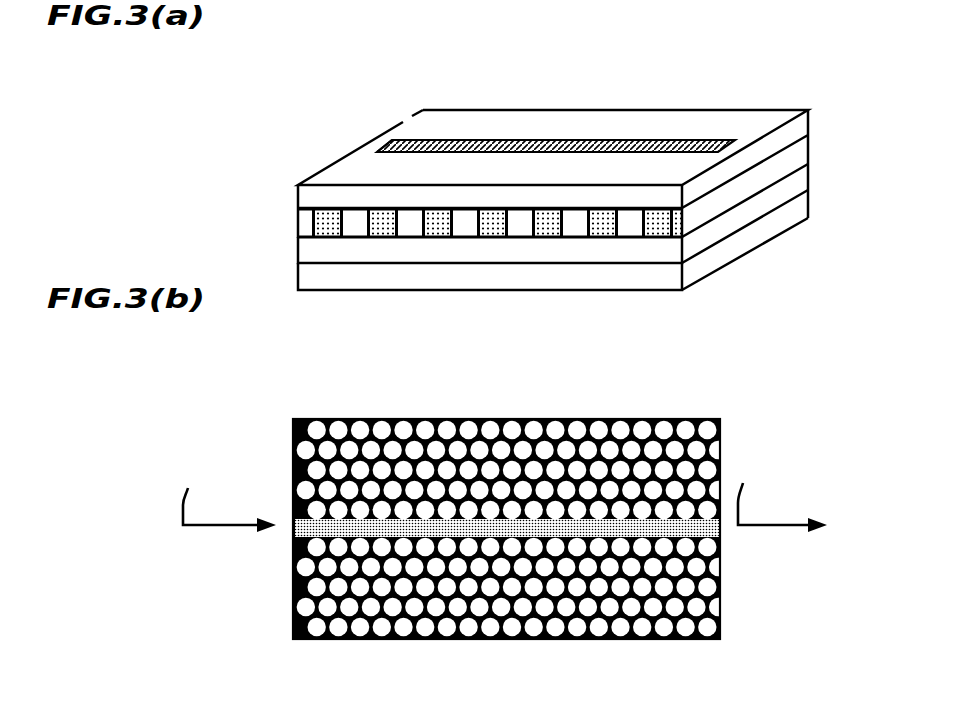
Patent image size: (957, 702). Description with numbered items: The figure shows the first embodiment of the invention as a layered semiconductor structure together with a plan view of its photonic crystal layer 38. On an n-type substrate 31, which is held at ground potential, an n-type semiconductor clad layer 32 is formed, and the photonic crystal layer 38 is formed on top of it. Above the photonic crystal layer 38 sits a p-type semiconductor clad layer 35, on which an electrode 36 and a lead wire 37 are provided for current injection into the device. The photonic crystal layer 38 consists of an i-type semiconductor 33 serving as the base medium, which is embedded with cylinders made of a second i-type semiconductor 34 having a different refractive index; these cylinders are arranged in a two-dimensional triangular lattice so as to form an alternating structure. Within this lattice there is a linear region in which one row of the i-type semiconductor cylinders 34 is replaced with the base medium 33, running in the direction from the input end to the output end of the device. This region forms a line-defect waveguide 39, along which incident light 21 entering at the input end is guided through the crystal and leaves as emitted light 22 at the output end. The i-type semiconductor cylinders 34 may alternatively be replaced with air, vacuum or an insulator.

In FIG. 3B, the incident light 21 is at (224, 493).
In FIG. 3B, the emitted light 22 is at (782, 491).
In FIG. 3A, the n-type substrate 31 is at (683, 278).
In FIG. 3A, the n-type semiconductor clad layer 32 is at (683, 252).
In FIG. 3B, the i-type semiconductor (base medium) 33 is at (721, 534).
In FIG. 3B, the i-type semiconductor cylinders 34 is at (708, 630).
In FIG. 3A, the p-type semiconductor clad layer 35 is at (683, 195).
In FIG. 3A, the electrode 36 is at (377, 152).
In FIG. 3A, the lead wire 37 is at (585, 139).
In FIG. 3A, the photonic crystal layer 38 is at (683, 222).
In FIG. 3B, the line-defect waveguide 39 is at (293, 532).